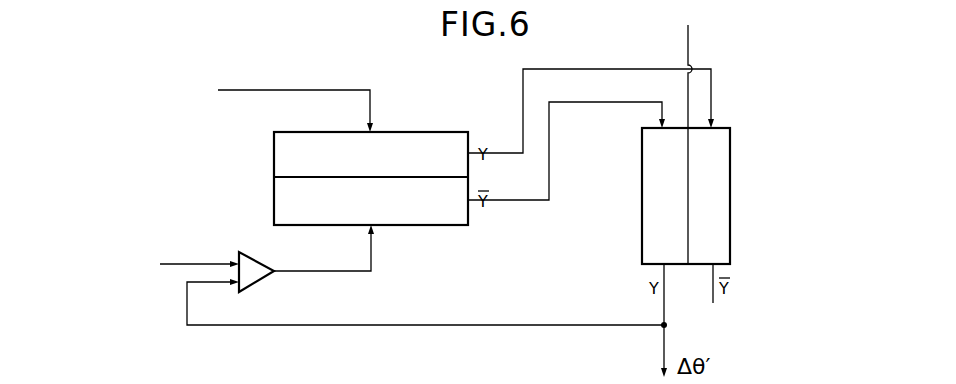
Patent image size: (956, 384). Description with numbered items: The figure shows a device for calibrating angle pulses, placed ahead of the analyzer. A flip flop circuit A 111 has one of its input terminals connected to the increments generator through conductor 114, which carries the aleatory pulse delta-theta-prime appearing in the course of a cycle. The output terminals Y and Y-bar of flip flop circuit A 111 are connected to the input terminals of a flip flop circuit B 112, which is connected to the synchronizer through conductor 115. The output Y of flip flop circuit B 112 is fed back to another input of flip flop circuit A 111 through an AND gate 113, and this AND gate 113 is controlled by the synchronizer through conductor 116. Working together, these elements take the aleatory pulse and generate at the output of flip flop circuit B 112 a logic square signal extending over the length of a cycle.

The flip flop circuit A 111 is at (428, 131).
The flip flop circuit B 112 is at (713, 186).
The AND gate 113 is at (258, 283).
The conductor 114 is at (341, 90).
The conductor 115 is at (690, 94).
The conductor 116 is at (207, 263).